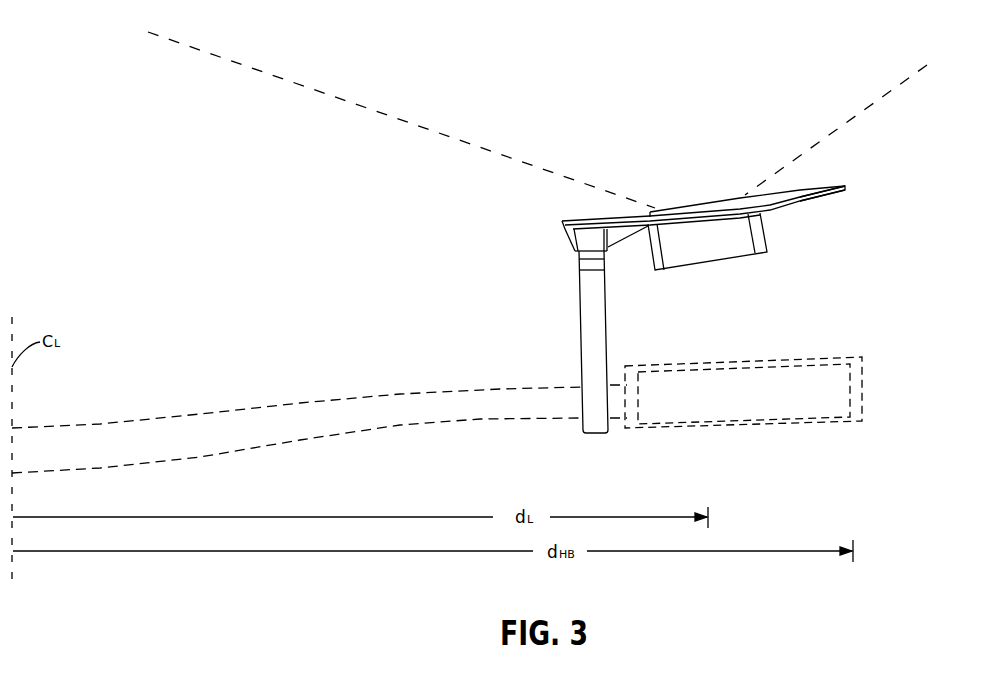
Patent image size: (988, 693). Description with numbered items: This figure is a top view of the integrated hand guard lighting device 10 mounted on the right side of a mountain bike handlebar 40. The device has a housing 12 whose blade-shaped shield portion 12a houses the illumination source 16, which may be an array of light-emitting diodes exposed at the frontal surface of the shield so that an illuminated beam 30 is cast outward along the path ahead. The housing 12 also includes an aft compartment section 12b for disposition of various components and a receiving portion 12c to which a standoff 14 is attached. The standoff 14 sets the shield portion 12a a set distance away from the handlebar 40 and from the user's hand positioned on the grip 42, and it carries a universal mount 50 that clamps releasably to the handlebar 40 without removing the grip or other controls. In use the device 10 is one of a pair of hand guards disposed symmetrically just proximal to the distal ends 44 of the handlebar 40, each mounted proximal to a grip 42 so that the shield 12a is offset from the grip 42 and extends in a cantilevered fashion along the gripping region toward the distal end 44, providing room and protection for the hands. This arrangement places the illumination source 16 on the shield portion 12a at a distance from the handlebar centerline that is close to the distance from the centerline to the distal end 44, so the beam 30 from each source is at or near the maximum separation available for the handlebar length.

The integrated hand guard lighting device 10 is at (613, 120).
The housing 12 is at (623, 217).
The blade-shaped shield portion 12a is at (822, 188).
The aft compartment section 12b is at (703, 264).
The receiving portion 12c is at (573, 246).
The standoff 14 is at (609, 340).
The illumination source 16 is at (702, 195).
The illuminated beam 30 is at (289, 80).
The handlebar 40 is at (133, 422).
The grip 42 is at (693, 422).
The handlebar distal end 44 is at (865, 380).
The universal mount 50 is at (562, 358).